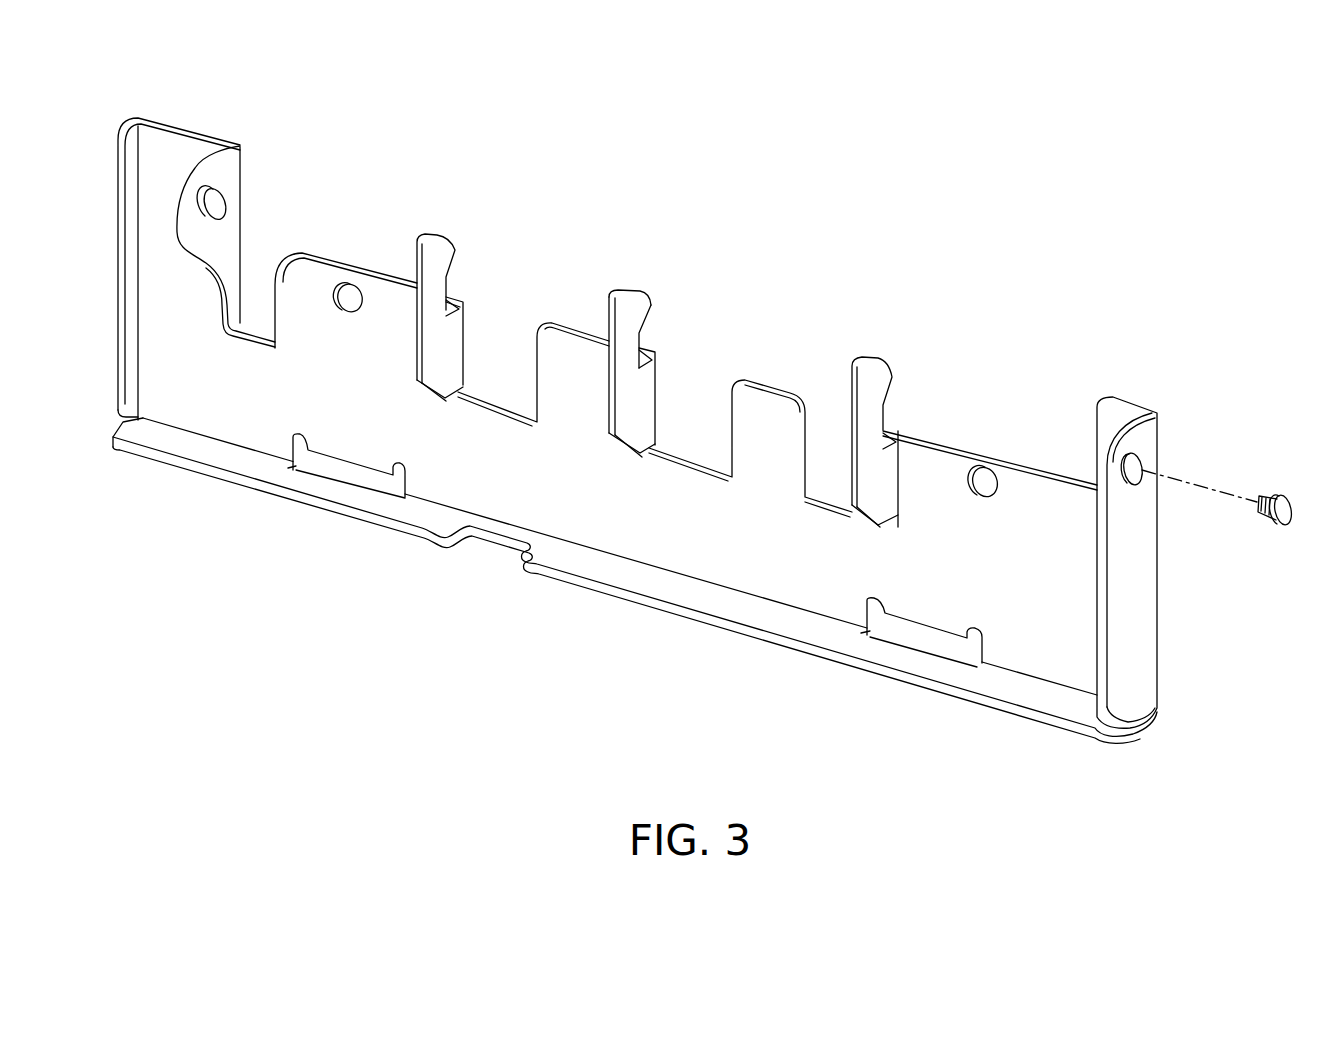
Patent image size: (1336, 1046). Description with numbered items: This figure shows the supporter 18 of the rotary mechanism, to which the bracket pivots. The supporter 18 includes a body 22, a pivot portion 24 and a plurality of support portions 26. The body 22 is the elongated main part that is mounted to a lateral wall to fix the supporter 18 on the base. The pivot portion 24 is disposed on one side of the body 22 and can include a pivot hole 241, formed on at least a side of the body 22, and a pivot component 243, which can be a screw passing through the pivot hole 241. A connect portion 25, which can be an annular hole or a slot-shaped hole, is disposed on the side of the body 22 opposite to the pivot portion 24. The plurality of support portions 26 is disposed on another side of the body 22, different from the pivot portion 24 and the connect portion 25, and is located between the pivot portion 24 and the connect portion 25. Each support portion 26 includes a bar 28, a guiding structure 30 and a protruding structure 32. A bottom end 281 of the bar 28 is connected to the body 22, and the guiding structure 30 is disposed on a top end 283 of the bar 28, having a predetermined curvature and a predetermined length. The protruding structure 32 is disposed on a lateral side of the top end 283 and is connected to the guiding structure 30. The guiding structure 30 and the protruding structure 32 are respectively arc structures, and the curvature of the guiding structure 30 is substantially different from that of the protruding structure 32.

The supporter 18 is at (1128, 140).
The body 22 is at (265, 427).
The pivot portion 24 is at (1173, 645).
The pivot hole 241 is at (1133, 480).
The pivot component 243 is at (1281, 518).
The connect portion 25 is at (227, 199).
The support portion 26 is at (440, 257).
The bar 28 is at (642, 392).
The bottom end 281 is at (630, 423).
The top end 283 is at (625, 308).
The guiding structure 30 is at (630, 291).
The protruding structure 32 is at (640, 310).